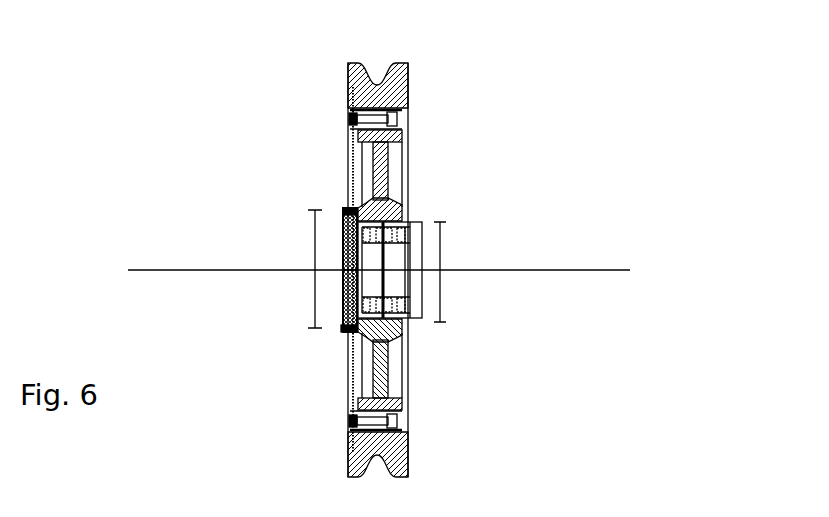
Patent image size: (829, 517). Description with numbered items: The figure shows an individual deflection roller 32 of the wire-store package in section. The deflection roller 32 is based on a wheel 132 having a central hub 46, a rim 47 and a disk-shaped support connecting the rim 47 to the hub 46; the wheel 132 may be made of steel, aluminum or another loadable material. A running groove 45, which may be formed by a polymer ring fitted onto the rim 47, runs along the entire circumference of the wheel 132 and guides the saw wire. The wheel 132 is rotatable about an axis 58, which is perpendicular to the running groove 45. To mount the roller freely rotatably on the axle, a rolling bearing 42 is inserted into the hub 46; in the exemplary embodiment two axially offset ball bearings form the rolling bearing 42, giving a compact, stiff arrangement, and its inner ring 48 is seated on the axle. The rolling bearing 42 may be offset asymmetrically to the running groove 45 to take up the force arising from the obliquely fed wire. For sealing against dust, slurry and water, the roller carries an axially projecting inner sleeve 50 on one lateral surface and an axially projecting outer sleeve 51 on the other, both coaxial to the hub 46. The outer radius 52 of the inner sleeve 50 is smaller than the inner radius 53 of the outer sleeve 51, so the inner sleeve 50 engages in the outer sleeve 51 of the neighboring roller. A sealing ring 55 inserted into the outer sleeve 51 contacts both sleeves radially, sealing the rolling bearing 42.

The deflection roller 32 is at (588, 234).
The rolling bearing 42 is at (405, 222).
The running groove 45 is at (406, 67).
The hub 46 is at (385, 204).
The rim 47 is at (406, 112).
The inner ring 48 is at (397, 242).
The inner sleeve 50 is at (262, 173).
The outer sleeve 51 is at (347, 206).
The outer radius 52 is at (316, 270).
The inner radius 53 is at (443, 297).
The sealing ring 55 is at (347, 328).
The axis 58 is at (543, 269).
The wheel 132 is at (392, 148).